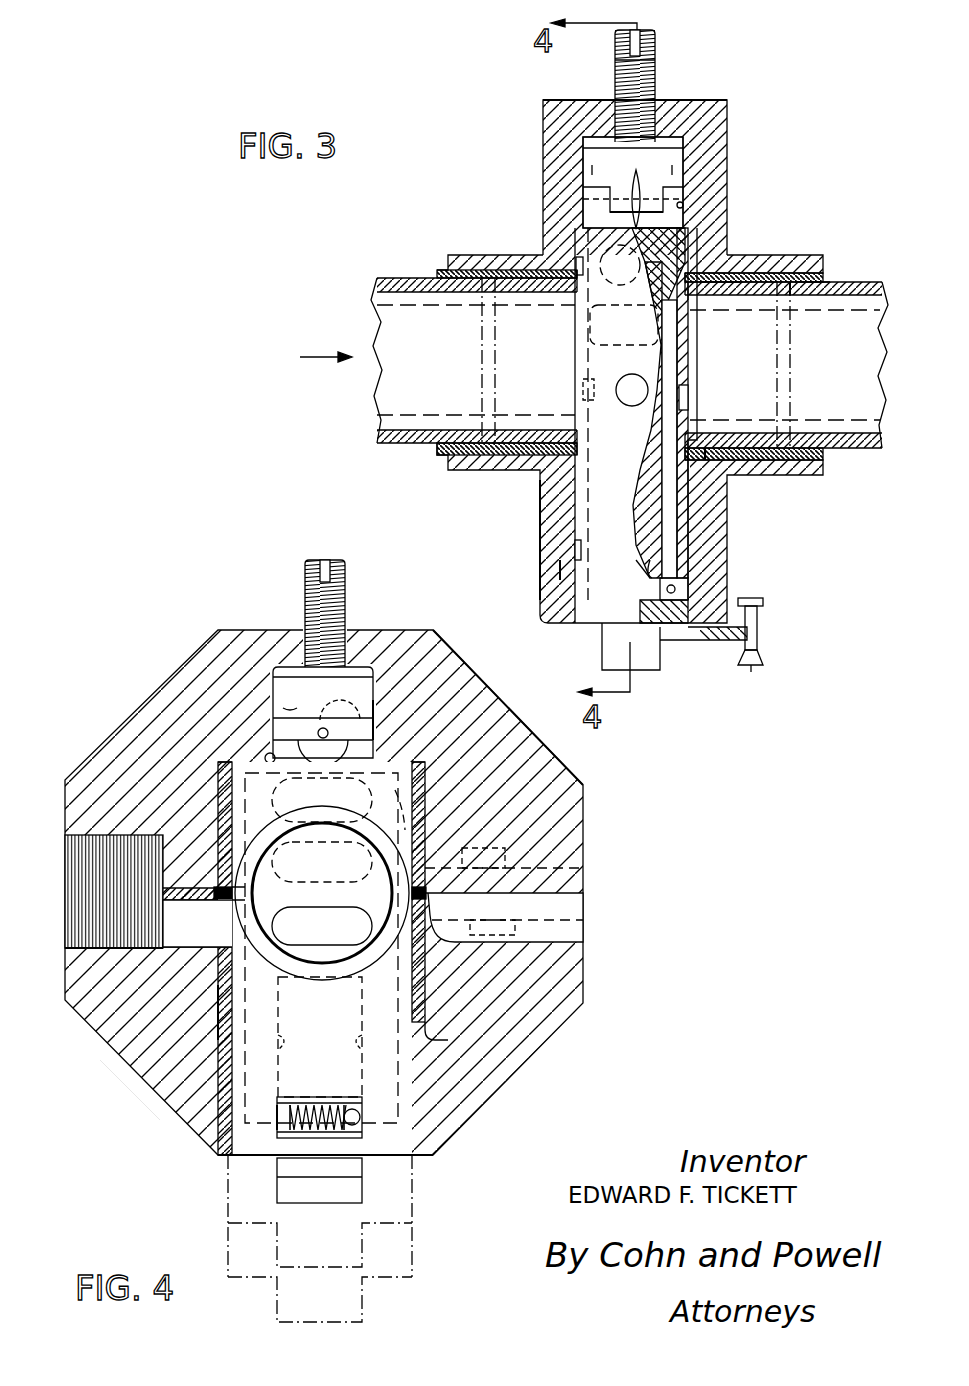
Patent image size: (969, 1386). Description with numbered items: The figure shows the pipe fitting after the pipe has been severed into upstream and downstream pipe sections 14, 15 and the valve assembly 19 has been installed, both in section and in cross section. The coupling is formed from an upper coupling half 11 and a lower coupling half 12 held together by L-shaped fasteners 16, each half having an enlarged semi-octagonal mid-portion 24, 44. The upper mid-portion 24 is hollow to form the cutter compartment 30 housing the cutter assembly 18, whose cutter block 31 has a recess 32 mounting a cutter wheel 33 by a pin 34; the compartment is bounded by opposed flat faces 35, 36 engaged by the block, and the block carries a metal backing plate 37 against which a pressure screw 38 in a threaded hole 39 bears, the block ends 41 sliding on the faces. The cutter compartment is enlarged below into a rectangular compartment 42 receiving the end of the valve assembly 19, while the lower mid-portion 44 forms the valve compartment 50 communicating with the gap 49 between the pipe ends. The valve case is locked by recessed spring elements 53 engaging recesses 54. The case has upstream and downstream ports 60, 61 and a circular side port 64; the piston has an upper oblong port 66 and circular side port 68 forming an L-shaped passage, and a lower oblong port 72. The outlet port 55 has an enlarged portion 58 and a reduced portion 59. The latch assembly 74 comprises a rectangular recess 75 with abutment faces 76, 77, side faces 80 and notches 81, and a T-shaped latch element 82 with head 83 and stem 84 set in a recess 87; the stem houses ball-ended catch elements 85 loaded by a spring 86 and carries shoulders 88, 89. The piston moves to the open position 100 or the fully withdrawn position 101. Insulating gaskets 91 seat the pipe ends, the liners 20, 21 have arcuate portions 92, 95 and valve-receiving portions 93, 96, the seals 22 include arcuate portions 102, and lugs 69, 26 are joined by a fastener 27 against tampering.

In FIG. 3, the upper coupling half 11 is at (455, 256).
In FIG. 3, the lower coupling half 12 is at (450, 472).
In FIG. 4, the lower coupling half 12 is at (165, 1110).
In FIG. 3, the upstream pipe section 14 is at (380, 446).
In FIG. 3, the downstream pipe section 15 is at (850, 462).
In FIG. 4, the L-shaped fasteners 16 is at (515, 860).
In FIG. 4, the cutter assembly 18 is at (388, 700).
In FIG. 3, the valve assembly 19 is at (693, 508).
In FIG. 4, the valve assembly 19 is at (420, 1108).
In FIG. 3, the upper liner 20 is at (828, 262).
In FIG. 4, the upper liner 20 is at (440, 741).
In FIG. 3, the lower liner 21 is at (792, 476).
In FIG. 4, the lower liner 21 is at (442, 1038).
In FIG. 4, the resilient seals 22 is at (583, 940).
In FIG. 3, the semi-octagonal mid-portion 24 is at (543, 123).
In FIG. 3, the lug 26 is at (765, 605).
In FIG. 3, the fastener 27 is at (752, 672).
In FIG. 3, the cutter compartment 30 is at (690, 206).
In FIG. 4, the cutter block 31 is at (296, 694).
In FIG. 3, the recess 32 is at (690, 147).
In FIG. 3, the cutter wheel 33 is at (683, 216).
In FIG. 4, the cutter wheel 33 is at (343, 699).
In FIG. 3, the pin 34 is at (607, 195).
In FIG. 3, the opposed flat faces 35 is at (684, 198).
In FIG. 4, the opposed flat faces 36 is at (268, 757).
In FIG. 3, the metal backing plate 37 is at (680, 112).
In FIG. 3, the pressure screw 38 is at (650, 58).
In FIG. 4, the pressure screw 38 is at (348, 566).
In FIG. 3, the threaded hole 39 is at (656, 88).
In FIG. 4, the ends of cutter block 41 is at (380, 671).
In FIG. 3, the rectangular compartment 42 is at (576, 262).
In FIG. 4, the semi-octagonal mid-portion 44 is at (526, 1080).
In FIG. 3, the gap 49 is at (598, 340).
In FIG. 3, the valve compartment 50 is at (575, 510).
In FIG. 4, the valve compartment 50 is at (230, 1030).
In FIG. 3, the recessed spring elements 53 is at (560, 566).
In FIG. 3, the recesses 54 is at (575, 550).
In FIG. 4, the outlet port 55 is at (78, 835).
In FIG. 4, the enlarged portion 58 is at (110, 948).
In FIG. 4, the reduced portion 59 is at (163, 948).
In FIG. 3, the upstream case port 60 is at (583, 389).
In FIG. 3, the downstream case port 61 is at (690, 396).
In FIG. 4, the downstream case port 61 is at (356, 942).
In FIG. 3, the circular side port 64 is at (632, 406).
In FIG. 4, the circular side port 64 is at (253, 886).
In FIG. 3, the upper oblong port 66 is at (614, 280).
In FIG. 4, the upper oblong port 66 is at (345, 818).
In FIG. 3, the circular side port 68 is at (700, 241).
In FIG. 3, the lug 69 is at (765, 660).
In FIG. 3, the lower oblong port 72 is at (620, 312).
In FIG. 4, the lower oblong port 72 is at (350, 880).
In FIG. 3, the latch assembly 74 is at (690, 590).
In FIG. 4, the latch assembly 74 is at (305, 1097).
In FIG. 4, the rectangular recess 75 is at (277, 1112).
In FIG. 4, the end abutment face 76 is at (280, 1156).
In FIG. 4, the end abutment face 77 is at (316, 996).
In FIG. 4, the side faces 80 is at (302, 1040).
In FIG. 4, the notches 81 is at (346, 1034).
In FIG. 3, the T-shaped latch element 82 is at (650, 596).
In FIG. 3, the head 83 is at (682, 570).
In FIG. 3, the stem 84 is at (652, 565).
In FIG. 3, the catch elements 85 is at (665, 596).
In FIG. 4, the catch elements 85 is at (290, 1136).
In FIG. 4, the spring 86 is at (346, 1142).
In FIG. 3, the recess 87 is at (702, 642).
In FIG. 3, the shoulder 88 is at (648, 672).
In FIG. 3, the shoulder 89 is at (676, 588).
In FIG. 3, the insulating gaskets 91 is at (695, 298).
In FIG. 4, the insulating gaskets 91 is at (387, 794).
In FIG. 3, the arcuate portion 92 is at (806, 446).
In FIG. 3, the valve-receiving portion 93 is at (705, 452).
In FIG. 4, the valve-receiving portion 93 is at (228, 985).
In FIG. 3, the arcuate portion 95 is at (806, 294).
In FIG. 3, the valve receiving portion 96 is at (736, 294).
In FIG. 4, the valve receiving portion 96 is at (220, 772).
In FIG. 4, the valve open position 100 is at (412, 1223).
In FIG. 4, the diverted-flow position 101 is at (412, 1277).
In FIG. 3, the arcuate portions 102 is at (482, 350).